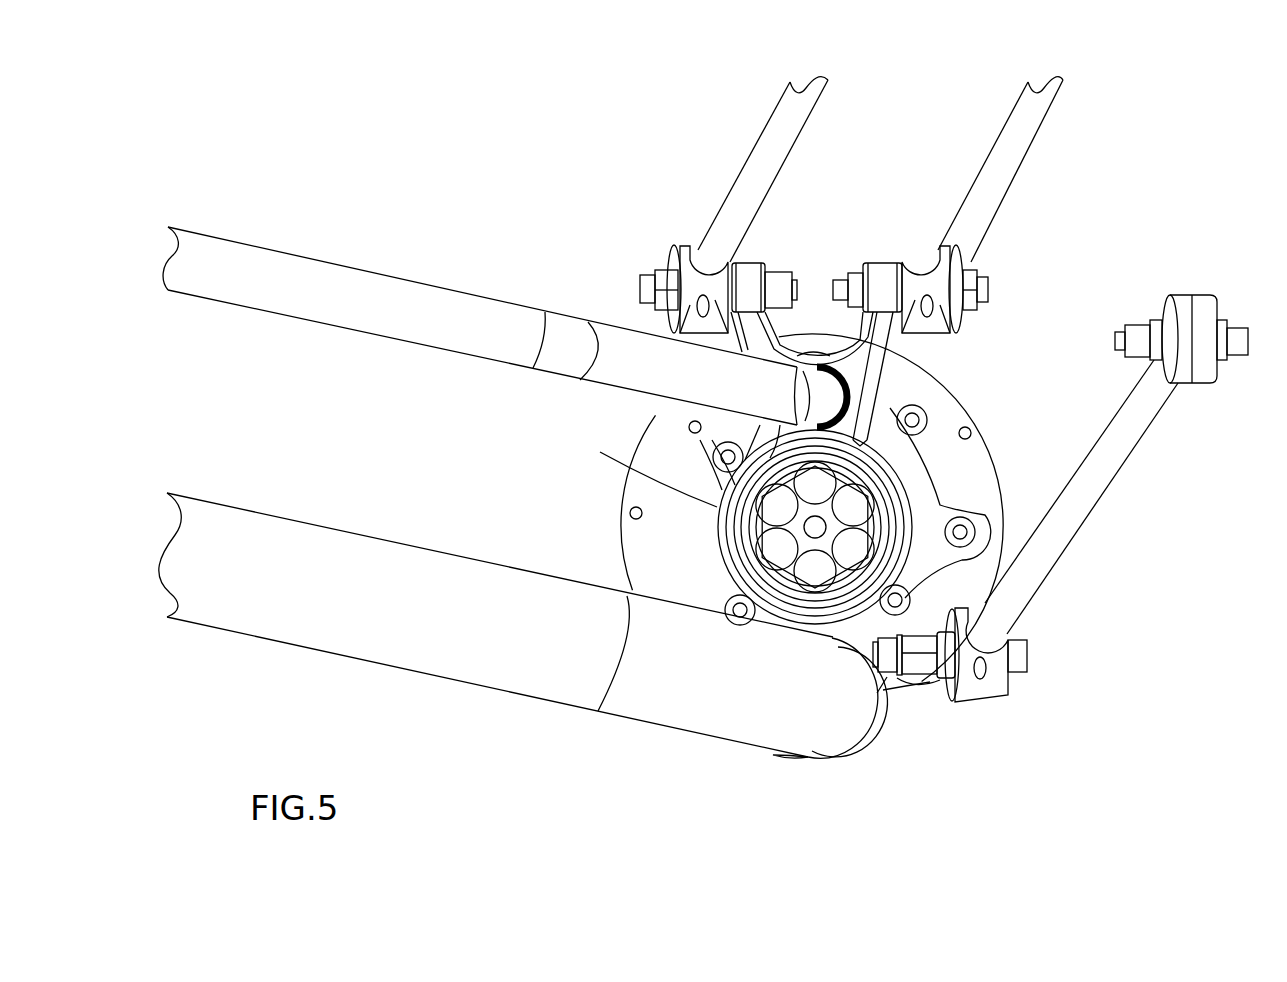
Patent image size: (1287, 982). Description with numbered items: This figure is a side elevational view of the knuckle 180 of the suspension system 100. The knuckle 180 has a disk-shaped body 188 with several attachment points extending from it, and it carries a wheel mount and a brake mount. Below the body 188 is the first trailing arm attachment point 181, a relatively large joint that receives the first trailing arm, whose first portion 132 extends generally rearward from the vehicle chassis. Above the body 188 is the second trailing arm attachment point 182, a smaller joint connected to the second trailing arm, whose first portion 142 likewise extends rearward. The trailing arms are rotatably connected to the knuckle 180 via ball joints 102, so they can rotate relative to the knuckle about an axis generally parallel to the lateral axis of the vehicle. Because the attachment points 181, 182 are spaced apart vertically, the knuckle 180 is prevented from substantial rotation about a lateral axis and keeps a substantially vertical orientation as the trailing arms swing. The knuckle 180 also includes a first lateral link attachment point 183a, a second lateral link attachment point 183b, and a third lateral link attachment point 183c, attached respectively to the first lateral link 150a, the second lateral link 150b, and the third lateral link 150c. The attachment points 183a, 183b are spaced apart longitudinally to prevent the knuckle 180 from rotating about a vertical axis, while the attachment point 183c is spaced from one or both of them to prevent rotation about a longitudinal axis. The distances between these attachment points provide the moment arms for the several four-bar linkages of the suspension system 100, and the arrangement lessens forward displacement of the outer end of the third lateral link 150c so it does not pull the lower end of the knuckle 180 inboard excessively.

The suspension system 100 is at (1158, 131).
The ball joints 102 is at (690, 255).
The first portion of first trailing arm 132 is at (420, 575).
The first portion of second trailing arm 142 is at (368, 290).
The first lateral link 150a is at (750, 186).
The second lateral link 150b is at (998, 192).
The third lateral link 150c is at (1118, 455).
The knuckle 180 is at (708, 548).
The first trailing arm attachment point 181 is at (880, 723).
The second trailing arm attachment point 182 is at (937, 368).
The first lateral link attachment point 183a is at (750, 272).
The second lateral link attachment point 183b is at (885, 268).
The third lateral link attachment point 183c is at (920, 684).
The disk-shaped body 188 is at (717, 508).